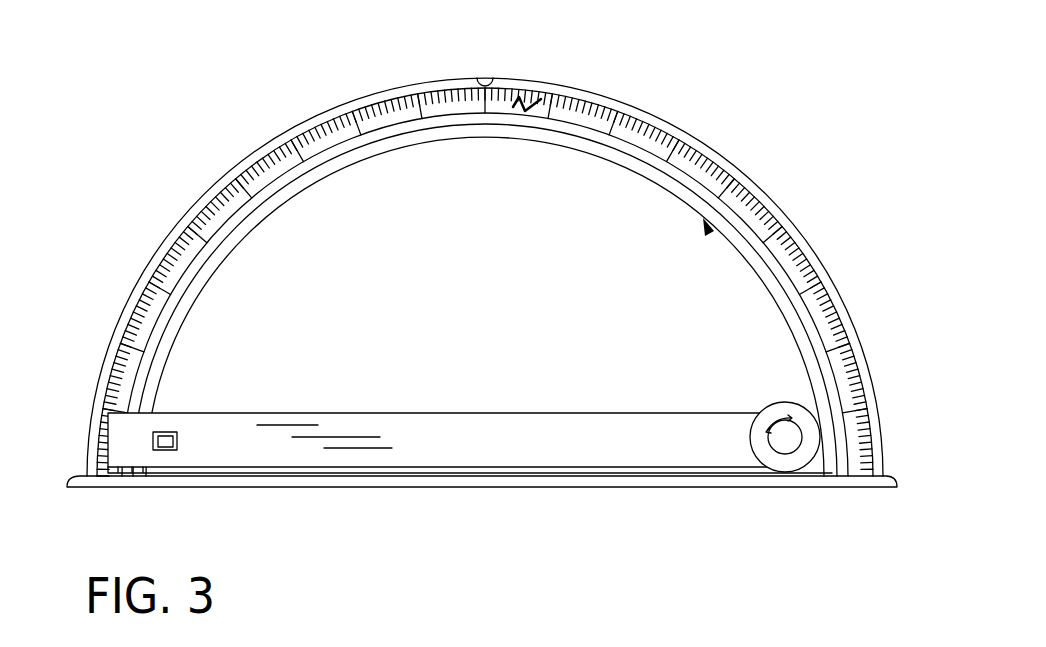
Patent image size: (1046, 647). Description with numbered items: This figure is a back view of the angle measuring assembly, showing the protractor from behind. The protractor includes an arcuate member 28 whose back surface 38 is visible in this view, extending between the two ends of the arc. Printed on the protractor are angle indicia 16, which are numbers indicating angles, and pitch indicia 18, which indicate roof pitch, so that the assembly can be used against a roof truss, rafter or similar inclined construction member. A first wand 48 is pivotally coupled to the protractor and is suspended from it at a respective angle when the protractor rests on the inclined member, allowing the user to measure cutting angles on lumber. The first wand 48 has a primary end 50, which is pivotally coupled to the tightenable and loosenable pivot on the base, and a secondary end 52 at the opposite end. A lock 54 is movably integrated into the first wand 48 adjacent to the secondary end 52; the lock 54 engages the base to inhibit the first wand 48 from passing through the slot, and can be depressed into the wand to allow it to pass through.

The angle indicia 16 is at (703, 172).
The pitch indicia 18 is at (709, 230).
The arcuate member 28 is at (407, 101).
The back surface 38 is at (524, 97).
The first wand 48 is at (531, 440).
The primary end 50 is at (753, 450).
The secondary end 52 is at (107, 441).
The lock 54 is at (170, 443).